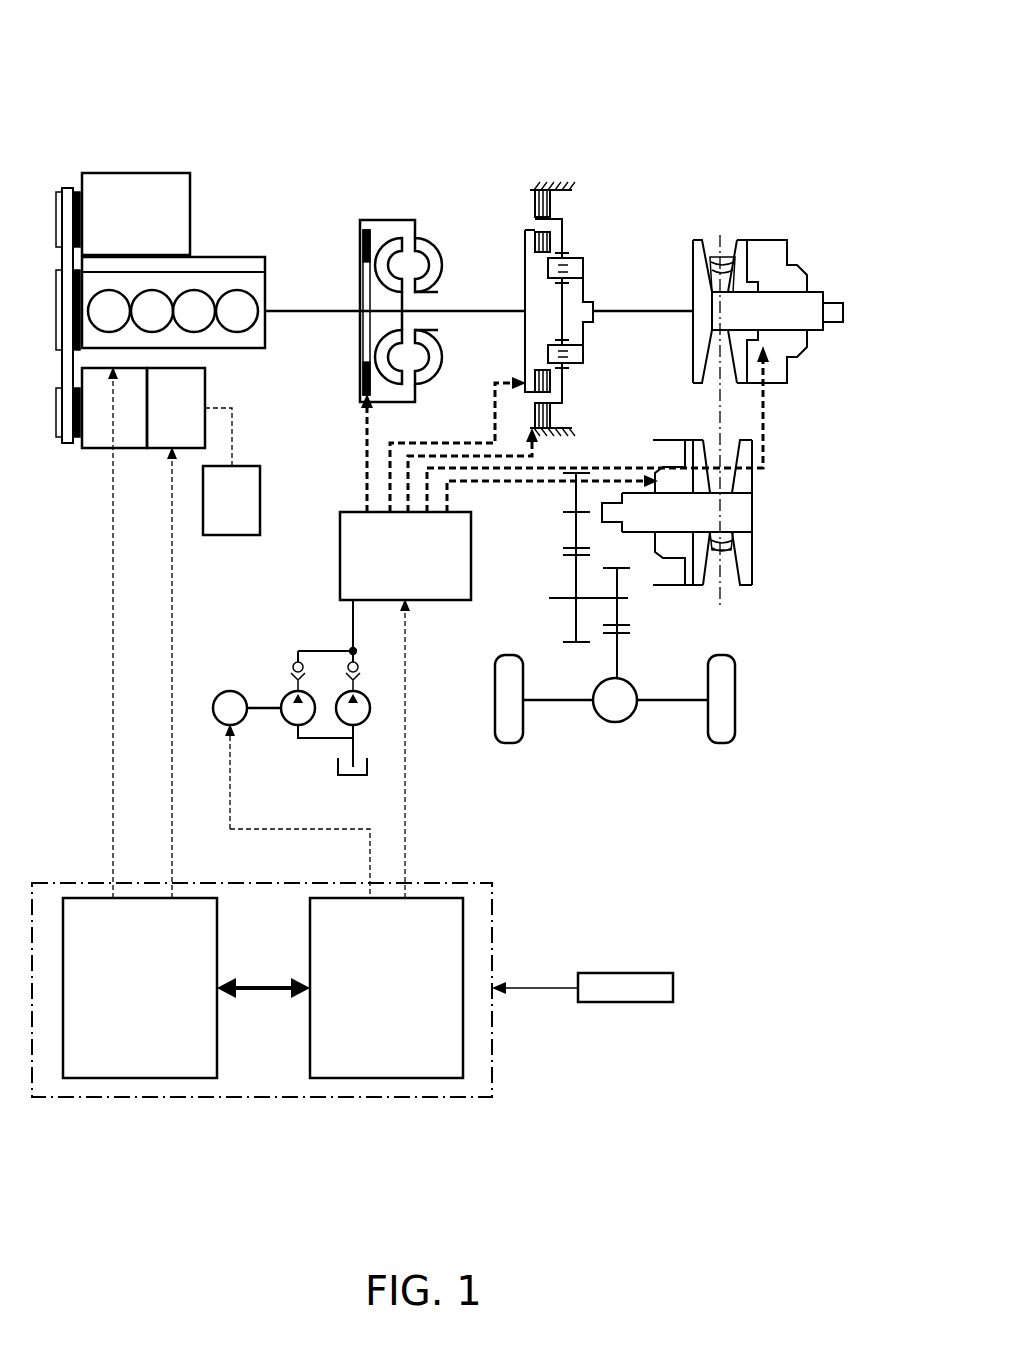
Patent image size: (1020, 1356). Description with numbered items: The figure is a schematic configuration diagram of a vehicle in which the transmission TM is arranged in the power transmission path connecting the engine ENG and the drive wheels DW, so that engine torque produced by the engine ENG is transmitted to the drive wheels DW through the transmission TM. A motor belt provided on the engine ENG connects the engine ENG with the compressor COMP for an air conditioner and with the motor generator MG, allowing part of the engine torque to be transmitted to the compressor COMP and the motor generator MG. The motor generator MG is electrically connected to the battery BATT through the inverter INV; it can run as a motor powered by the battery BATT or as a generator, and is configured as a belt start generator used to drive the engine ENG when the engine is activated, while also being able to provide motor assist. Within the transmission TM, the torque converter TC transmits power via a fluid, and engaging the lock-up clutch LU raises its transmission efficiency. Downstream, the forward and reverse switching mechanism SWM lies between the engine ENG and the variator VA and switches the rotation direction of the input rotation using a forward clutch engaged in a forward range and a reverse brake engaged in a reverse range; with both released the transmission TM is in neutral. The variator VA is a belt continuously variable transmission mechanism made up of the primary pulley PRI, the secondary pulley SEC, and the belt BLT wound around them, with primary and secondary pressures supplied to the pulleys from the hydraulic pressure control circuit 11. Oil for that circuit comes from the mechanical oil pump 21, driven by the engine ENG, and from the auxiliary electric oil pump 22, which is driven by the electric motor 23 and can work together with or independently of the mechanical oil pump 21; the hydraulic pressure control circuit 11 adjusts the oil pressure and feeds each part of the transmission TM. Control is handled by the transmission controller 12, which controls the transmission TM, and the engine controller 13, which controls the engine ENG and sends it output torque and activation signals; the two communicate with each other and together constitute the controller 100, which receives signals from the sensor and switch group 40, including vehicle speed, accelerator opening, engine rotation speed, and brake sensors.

The transmission TM is at (820, 65).
The engine ENG is at (228, 256).
The compressor COMP is at (138, 180).
The motor generator MG is at (98, 450).
The inverter INV is at (160, 450).
The battery BATT is at (232, 536).
The torque converter TC is at (397, 205).
The lock-up clutch LU is at (362, 392).
The forward and reverse switching mechanism SWM is at (580, 284).
The variator VA is at (733, 388).
The primary pulley PRI is at (805, 270).
The secondary pulley SEC is at (755, 540).
The belt BLT is at (723, 553).
The drive wheels DW is at (494, 703).
The hydraulic pressure control circuit 11 is at (340, 570).
The mechanical oil pump 21 is at (360, 720).
The electric oil pump 22 is at (283, 720).
The electric motor 23 is at (230, 690).
The controller 100 is at (276, 991).
The transmission controller 12 is at (390, 1080).
The engine controller 13 is at (137, 1080).
The sensor and switch group 40 is at (673, 985).